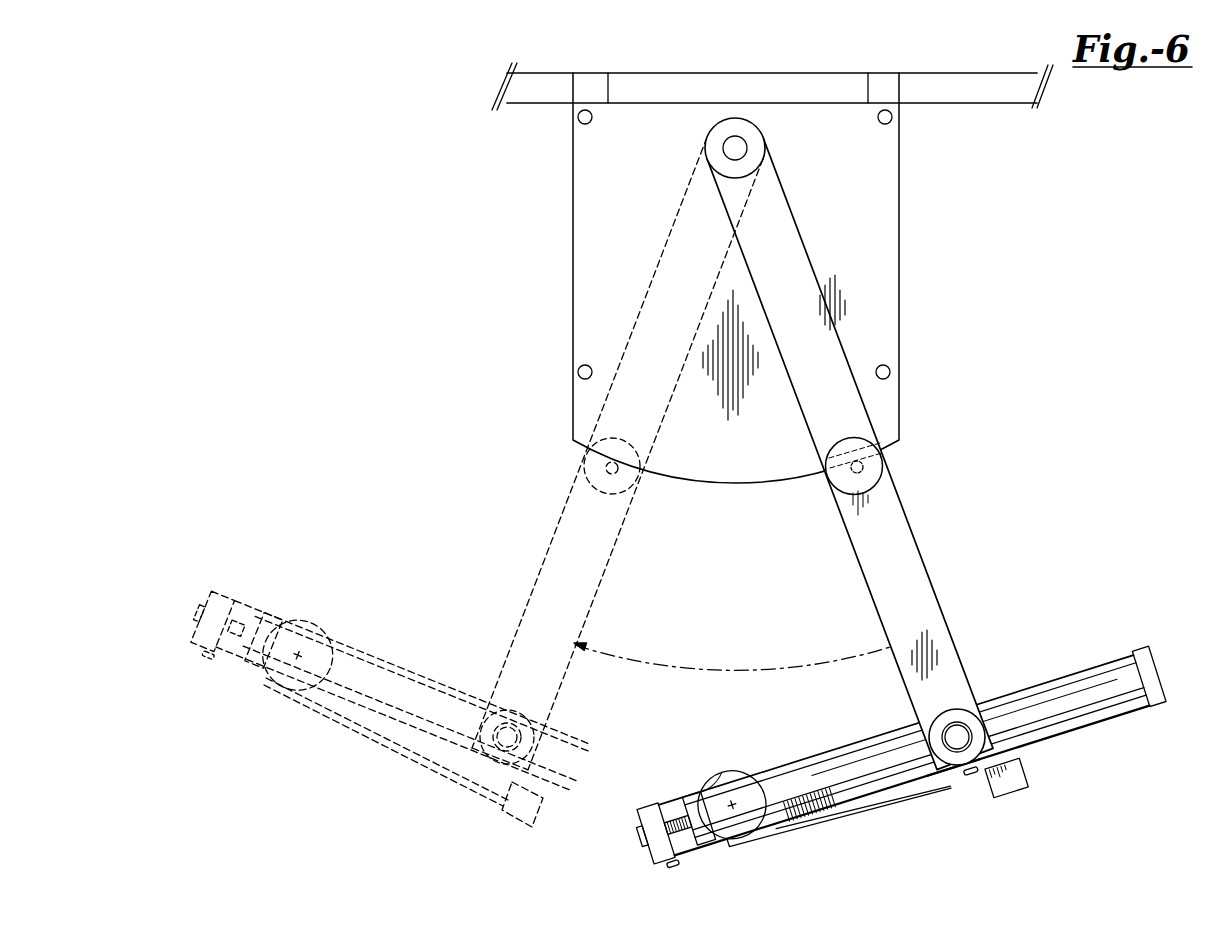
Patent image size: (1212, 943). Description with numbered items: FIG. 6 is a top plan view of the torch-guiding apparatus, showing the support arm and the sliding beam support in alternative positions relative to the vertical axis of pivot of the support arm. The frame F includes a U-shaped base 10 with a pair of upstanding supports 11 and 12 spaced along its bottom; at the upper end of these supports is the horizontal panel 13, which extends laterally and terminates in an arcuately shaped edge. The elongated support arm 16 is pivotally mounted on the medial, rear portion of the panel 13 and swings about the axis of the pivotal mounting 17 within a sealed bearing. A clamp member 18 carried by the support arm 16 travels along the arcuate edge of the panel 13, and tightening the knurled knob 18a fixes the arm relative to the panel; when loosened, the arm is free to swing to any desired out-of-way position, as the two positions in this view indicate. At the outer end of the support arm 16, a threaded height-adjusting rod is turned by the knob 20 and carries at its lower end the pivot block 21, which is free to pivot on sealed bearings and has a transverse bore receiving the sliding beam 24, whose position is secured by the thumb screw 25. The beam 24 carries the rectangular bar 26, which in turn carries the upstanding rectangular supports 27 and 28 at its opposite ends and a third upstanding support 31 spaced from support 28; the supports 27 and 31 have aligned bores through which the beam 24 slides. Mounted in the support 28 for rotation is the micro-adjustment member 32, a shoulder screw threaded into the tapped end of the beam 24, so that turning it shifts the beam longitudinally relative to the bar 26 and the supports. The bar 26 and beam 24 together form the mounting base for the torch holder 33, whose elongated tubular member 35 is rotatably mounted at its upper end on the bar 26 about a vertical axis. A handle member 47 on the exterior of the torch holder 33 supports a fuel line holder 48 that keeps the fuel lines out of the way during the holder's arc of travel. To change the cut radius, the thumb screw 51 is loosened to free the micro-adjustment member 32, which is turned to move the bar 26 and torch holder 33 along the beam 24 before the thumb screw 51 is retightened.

The U-shaped base 10 is at (708, 73).
The upstanding support 11 is at (610, 87).
The upstanding support 12 is at (867, 92).
The horizontal panel 13 is at (862, 249).
The support arm 16 is at (626, 303).
The pivotal mounting 17 is at (747, 141).
The clamp member 18 is at (888, 491).
The knurled knob 18a is at (862, 463).
The knob 20 is at (941, 718).
The pivot block 21 is at (952, 784).
The sliding beam 24 is at (391, 665).
The thumb screw 25 is at (970, 778).
The rectangular bar 26 is at (445, 676).
The upstanding rectangular support 27 is at (1148, 650).
The upstanding rectangular support 28 is at (653, 800).
The third upstanding support 31 is at (697, 794).
The micro-adjustment member 32 is at (636, 843).
The torch holder 33 is at (305, 603).
The elongated member 35 is at (727, 770).
The handle member 47 is at (864, 822).
The fuel line holder 48 is at (1028, 782).
The thumb screw 51 is at (675, 867).
The frame F is at (972, 115).